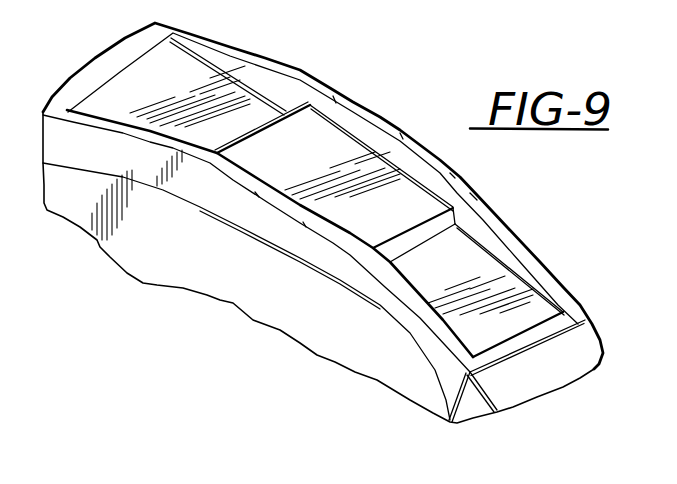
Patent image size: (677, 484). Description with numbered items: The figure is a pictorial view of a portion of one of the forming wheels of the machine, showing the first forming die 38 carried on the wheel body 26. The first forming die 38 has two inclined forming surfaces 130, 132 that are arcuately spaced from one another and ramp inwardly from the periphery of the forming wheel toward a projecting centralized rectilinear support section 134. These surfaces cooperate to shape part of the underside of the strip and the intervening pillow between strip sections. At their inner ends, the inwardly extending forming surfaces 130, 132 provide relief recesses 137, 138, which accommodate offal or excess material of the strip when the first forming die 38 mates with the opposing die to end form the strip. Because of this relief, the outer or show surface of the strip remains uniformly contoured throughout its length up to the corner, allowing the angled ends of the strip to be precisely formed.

The body 26 is at (240, 282).
The first forming die 38 is at (467, 178).
The inclined forming surface 130 is at (249, 105).
The inclined forming surface 132 is at (487, 272).
The centralized rectilinear support section 134 is at (352, 153).
The relief recess 137 is at (247, 133).
The relief recess 138 is at (400, 240).